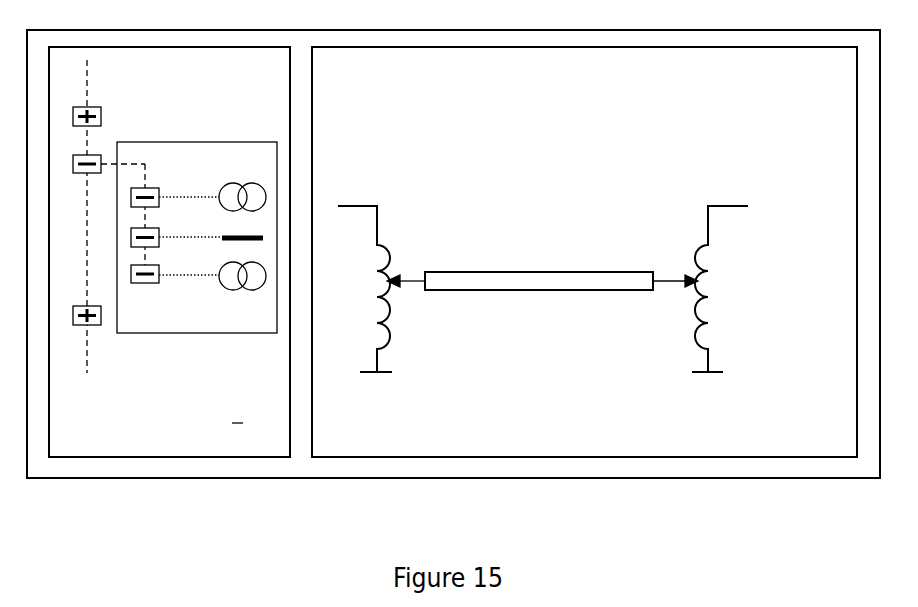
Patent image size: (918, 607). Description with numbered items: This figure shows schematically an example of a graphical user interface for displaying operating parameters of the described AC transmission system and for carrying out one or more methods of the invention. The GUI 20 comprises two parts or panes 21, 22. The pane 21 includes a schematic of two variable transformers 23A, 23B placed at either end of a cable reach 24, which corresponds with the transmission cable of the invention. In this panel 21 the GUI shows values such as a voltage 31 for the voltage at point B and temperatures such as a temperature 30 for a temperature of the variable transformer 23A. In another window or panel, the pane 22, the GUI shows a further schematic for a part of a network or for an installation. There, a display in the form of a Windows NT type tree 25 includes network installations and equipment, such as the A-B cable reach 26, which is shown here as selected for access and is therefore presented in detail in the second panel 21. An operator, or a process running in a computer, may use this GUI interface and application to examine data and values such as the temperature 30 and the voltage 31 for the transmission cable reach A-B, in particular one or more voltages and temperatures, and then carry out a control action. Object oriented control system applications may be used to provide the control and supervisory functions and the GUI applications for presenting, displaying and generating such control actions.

The GUI 20 is at (453, 272).
The pane 21 is at (352, 438).
The pane 22 is at (193, 438).
The variable transformer 23A is at (393, 387).
The variable transformer 23B is at (708, 385).
The cable reach 24 is at (538, 307).
The Windows NT type tree 25 is at (95, 333).
The A-B cable reach 26 is at (172, 297).
The temperature 30 is at (425, 343).
The voltage 31 is at (773, 203).